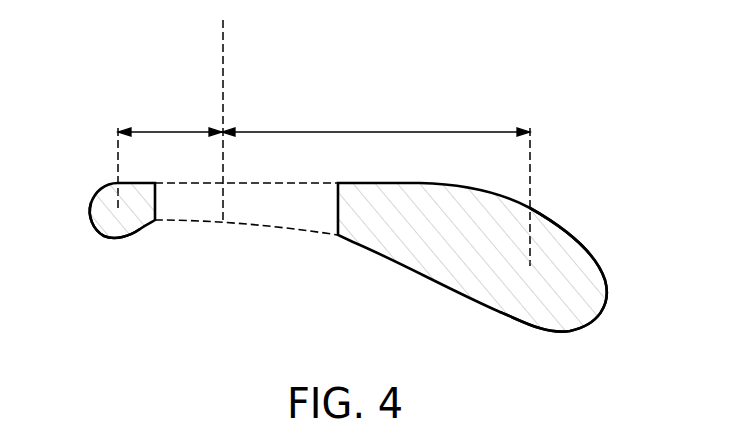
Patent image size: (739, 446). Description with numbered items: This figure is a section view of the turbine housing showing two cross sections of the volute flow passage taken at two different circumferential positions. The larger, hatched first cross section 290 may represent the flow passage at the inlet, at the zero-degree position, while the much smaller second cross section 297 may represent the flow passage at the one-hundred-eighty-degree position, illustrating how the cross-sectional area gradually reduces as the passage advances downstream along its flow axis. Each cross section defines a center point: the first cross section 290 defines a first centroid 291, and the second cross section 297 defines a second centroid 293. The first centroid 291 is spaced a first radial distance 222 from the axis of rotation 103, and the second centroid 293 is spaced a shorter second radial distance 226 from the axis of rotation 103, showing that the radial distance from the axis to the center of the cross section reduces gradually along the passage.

The axis of rotation 103 is at (222, 43).
The first radial distance 222 is at (375, 132).
The second radial distance 226 is at (168, 130).
The first cross section 290 is at (453, 238).
The first centroid 291 is at (530, 266).
The second centroid 293 is at (118, 211).
The second cross section 297 is at (110, 225).